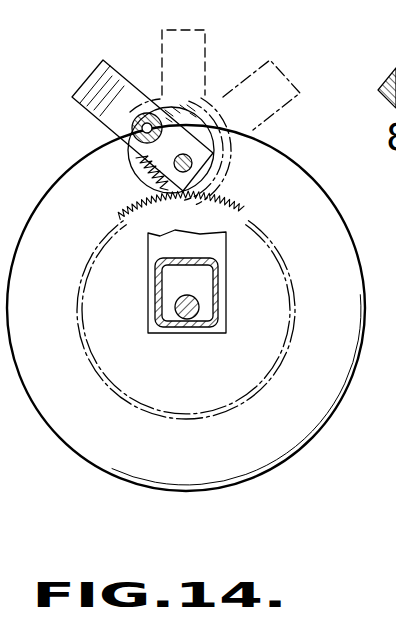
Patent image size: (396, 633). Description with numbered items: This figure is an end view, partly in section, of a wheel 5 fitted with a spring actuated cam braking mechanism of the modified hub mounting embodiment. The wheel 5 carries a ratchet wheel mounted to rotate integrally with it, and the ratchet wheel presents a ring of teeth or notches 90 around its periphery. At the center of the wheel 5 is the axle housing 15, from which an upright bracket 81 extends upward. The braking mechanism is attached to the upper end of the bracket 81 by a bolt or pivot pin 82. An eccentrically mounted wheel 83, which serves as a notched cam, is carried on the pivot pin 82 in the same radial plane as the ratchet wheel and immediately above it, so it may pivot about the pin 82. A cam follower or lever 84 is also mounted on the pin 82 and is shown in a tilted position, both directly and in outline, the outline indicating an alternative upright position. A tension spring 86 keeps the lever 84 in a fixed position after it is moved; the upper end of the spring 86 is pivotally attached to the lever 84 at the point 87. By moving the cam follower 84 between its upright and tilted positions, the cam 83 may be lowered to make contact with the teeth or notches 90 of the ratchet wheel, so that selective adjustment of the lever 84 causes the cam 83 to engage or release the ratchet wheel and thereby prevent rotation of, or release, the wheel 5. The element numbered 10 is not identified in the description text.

The wheel 5 is at (96, 468).
The shaft 10 is at (197, 305).
The housing 15 is at (198, 330).
The upright bracket 81 is at (223, 252).
The pivot pin 82 is at (192, 160).
The eccentrically mounted wheel 83 is at (200, 107).
The cam follower or lever 84 is at (104, 60).
The tension spring 86 is at (140, 172).
The attachment point of spring to lever 87 is at (132, 128).
The teeth or notches 90 is at (120, 216).